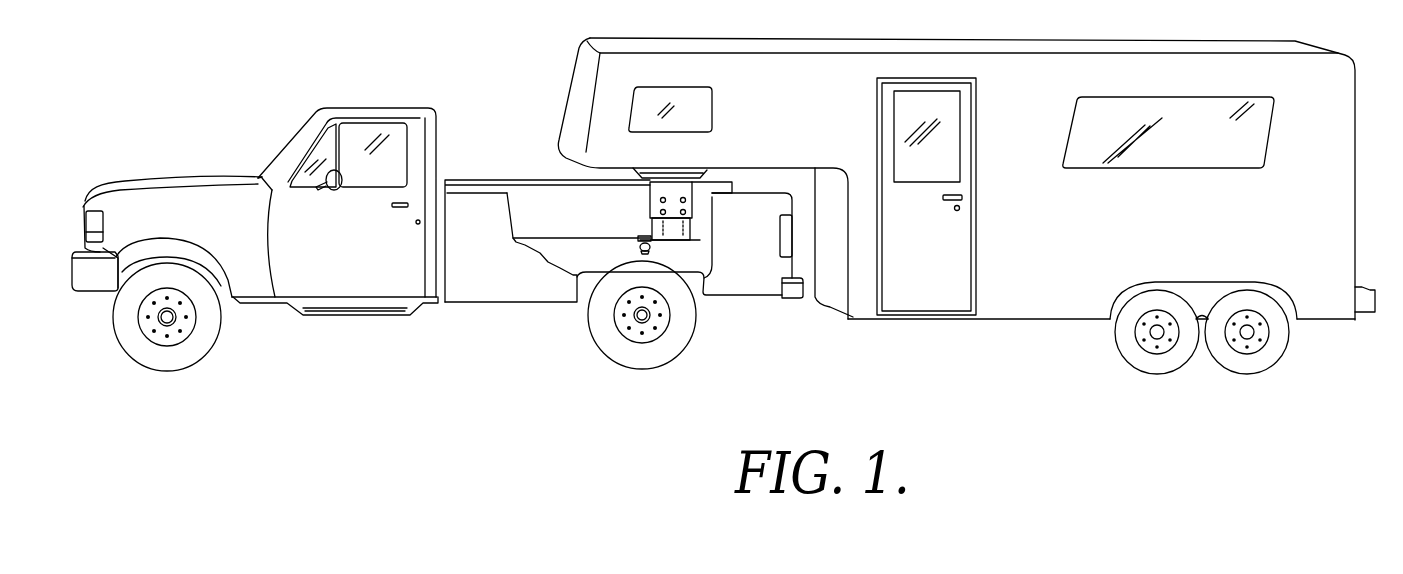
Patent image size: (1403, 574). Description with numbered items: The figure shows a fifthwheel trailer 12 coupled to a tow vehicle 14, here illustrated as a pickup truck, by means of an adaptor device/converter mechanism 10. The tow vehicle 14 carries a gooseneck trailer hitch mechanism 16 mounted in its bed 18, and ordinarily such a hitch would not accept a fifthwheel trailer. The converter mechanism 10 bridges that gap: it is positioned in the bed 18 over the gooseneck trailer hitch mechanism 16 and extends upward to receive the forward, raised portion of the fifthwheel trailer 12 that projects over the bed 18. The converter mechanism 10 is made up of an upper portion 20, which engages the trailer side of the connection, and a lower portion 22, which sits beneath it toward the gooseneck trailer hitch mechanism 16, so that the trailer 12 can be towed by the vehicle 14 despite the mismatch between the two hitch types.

The adaptor device/converter mechanism 10 is at (662, 201).
The fifthwheel trailer 12 is at (738, 58).
The tow vehicle 14 is at (379, 112).
The gooseneck trailer hitch mechanism 16 is at (642, 254).
The bed 18 is at (540, 256).
The upper portion 20 is at (692, 193).
The lower portion 22 is at (683, 230).